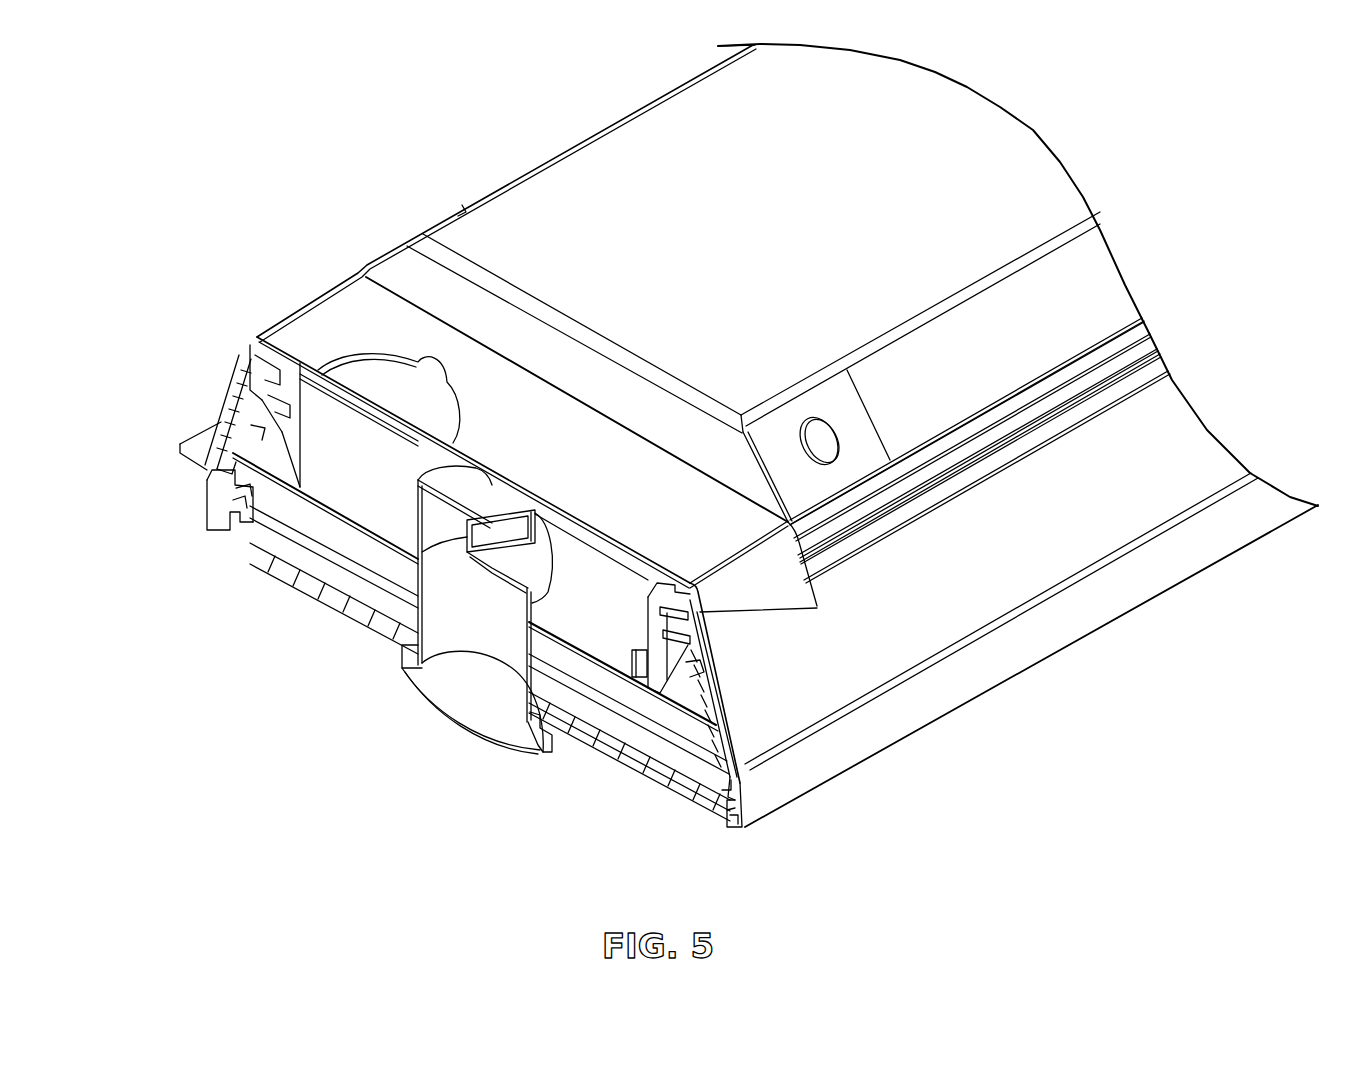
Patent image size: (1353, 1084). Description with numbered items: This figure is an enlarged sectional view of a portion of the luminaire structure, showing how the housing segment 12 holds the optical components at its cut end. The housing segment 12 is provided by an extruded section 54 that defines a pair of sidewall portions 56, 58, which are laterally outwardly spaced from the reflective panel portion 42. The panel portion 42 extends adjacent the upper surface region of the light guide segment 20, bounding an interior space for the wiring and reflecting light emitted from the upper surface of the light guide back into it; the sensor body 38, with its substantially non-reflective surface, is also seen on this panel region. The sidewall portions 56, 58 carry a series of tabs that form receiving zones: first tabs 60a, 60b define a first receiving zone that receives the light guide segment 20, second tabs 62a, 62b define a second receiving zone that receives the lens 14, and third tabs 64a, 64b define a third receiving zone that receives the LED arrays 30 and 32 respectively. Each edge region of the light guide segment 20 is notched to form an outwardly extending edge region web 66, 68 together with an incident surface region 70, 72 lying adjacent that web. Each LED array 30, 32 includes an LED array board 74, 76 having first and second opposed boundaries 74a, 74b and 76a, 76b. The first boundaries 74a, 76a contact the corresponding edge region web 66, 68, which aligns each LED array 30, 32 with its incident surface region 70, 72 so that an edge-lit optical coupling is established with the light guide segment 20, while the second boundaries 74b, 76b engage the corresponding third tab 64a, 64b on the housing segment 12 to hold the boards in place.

The housing segment 12 is at (1065, 528).
The lens 14 is at (352, 612).
The light guide segment 20 is at (632, 712).
The LED array 30 is at (760, 712).
The LED array 32 is at (228, 428).
The sensor body 38 is at (418, 577).
The panel portion 42 is at (562, 620).
The extruded section 54 is at (930, 614).
The sidewall portion 56 is at (720, 742).
The sidewall portion 58 is at (228, 400).
The first tab 60a is at (712, 782).
The first tab 60b is at (212, 477).
The second tab 62a is at (735, 818).
The second tab 62b is at (210, 514).
The third tab 64a is at (712, 677).
The third tab 64b is at (262, 386).
The edge region web 66 is at (728, 787).
The edge region web 68 is at (238, 500).
The incident surface region 70 is at (737, 777).
The incident surface region 72 is at (240, 472).
The LED array board 74 is at (696, 690).
The first boundary 74a is at (708, 752).
The second boundary 74b is at (716, 697).
The LED array board 76 is at (258, 430).
The first boundary 76a is at (242, 488).
The second boundary 76b is at (258, 392).